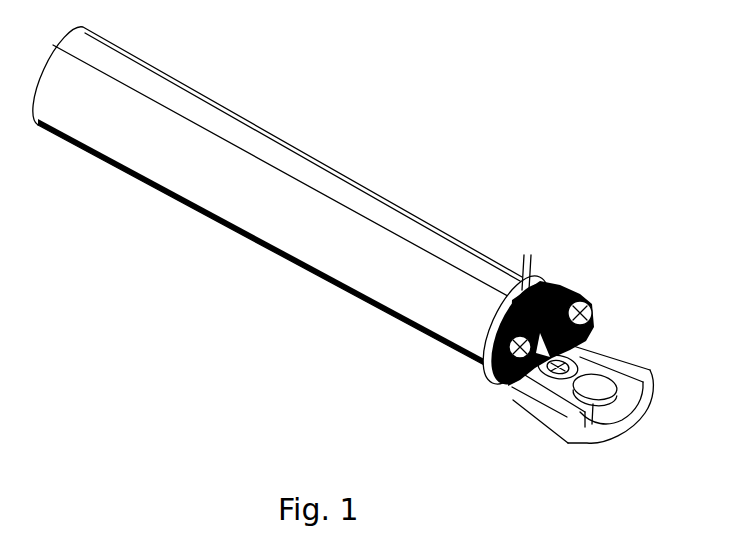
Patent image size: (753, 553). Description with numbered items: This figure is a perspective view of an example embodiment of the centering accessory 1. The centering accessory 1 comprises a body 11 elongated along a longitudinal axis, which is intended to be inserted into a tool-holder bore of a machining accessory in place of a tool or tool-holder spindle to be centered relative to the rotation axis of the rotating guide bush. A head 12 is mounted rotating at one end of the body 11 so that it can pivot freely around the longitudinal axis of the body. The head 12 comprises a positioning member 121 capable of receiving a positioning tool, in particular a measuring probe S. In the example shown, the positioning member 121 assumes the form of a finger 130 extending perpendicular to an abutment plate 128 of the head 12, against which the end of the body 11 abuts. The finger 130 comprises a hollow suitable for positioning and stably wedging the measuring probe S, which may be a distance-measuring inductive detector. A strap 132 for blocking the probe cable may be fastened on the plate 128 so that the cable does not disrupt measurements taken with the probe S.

The centering accessory 1 is at (378, 271).
The body 11 is at (240, 112).
The head 12 is at (601, 344).
The positioning member 121 is at (590, 447).
The plate 128 is at (483, 342).
The finger 130 is at (542, 412).
The strap 132 is at (563, 285).
The measuring probe S is at (616, 394).